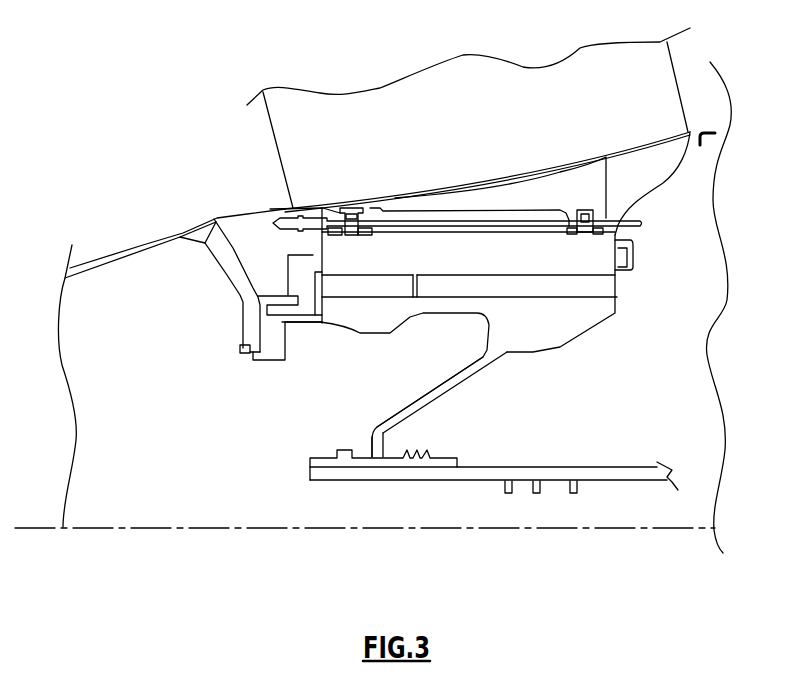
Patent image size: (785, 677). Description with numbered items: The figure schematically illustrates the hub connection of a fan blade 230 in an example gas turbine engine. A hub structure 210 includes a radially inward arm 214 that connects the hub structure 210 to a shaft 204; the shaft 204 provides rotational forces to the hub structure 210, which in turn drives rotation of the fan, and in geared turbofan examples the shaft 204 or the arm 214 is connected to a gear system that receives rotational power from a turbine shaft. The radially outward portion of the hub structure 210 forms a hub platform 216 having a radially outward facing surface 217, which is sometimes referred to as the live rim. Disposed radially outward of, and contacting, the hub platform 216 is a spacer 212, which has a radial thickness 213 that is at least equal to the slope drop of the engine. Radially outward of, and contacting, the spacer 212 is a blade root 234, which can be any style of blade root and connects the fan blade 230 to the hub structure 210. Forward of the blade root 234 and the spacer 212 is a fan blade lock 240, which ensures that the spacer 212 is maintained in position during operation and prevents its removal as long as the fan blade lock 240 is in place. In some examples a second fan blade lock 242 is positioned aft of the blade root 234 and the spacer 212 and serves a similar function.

The shaft 204 is at (553, 473).
The hub structure 210 is at (460, 380).
The spacer 212 is at (507, 283).
The radial thickness 213 is at (437, 276).
The radially inward arm 214 is at (383, 430).
The hub platform 216 is at (335, 317).
The radially outward facing surface 217 is at (365, 290).
The fan blade 230 is at (422, 98).
The blade root 234 is at (403, 230).
The fan blade lock 240 is at (300, 270).
The second fan blade lock 242 is at (622, 267).